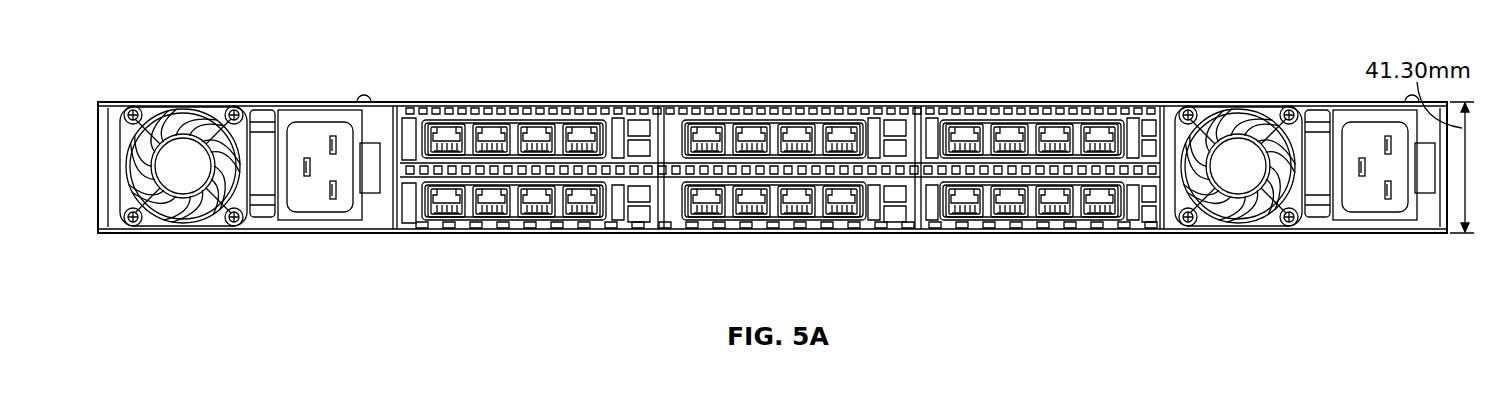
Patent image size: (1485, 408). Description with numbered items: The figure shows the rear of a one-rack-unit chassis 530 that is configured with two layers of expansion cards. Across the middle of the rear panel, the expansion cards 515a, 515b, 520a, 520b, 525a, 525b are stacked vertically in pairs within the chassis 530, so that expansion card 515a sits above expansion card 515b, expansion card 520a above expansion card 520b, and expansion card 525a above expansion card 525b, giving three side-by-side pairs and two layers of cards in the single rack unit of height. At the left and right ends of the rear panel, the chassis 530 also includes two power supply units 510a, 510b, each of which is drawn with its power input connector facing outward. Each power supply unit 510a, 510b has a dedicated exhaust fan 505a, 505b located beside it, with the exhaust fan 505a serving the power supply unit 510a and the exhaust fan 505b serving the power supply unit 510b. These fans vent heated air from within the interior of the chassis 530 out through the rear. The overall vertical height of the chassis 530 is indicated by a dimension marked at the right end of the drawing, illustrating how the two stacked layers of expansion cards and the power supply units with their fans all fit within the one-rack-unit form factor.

The exhaust fan 505a is at (190, 212).
The exhaust fan 505b is at (1243, 212).
The power supply unit 510a is at (327, 214).
The power supply unit 510b is at (1378, 215).
The expansion card 515a is at (488, 155).
The expansion card 515b is at (538, 218).
The expansion card 520a is at (745, 153).
The expansion card 520b is at (795, 218).
The expansion card 525a is at (1010, 153).
The expansion card 525b is at (1060, 218).
The chassis 530 is at (1153, 100).